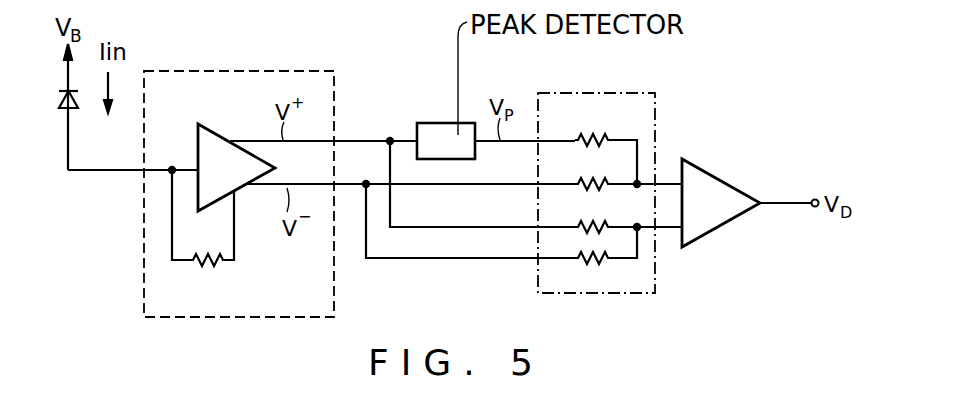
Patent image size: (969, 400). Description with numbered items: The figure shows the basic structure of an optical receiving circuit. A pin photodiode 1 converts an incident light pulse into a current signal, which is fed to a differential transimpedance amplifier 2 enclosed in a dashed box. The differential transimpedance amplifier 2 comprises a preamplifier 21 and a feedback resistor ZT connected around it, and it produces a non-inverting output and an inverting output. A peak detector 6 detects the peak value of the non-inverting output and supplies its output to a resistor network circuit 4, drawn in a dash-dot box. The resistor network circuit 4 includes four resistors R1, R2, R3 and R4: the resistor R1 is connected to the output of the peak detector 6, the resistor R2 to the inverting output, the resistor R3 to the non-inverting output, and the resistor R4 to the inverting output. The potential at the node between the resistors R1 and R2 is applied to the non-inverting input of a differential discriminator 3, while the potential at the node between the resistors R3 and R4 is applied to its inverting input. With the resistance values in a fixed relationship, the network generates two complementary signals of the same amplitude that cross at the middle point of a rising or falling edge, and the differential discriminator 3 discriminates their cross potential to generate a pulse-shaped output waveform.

The pin photodiode 1 is at (73, 110).
The differential transimpedance amplifier 2 is at (212, 70).
The preamplifier 21 is at (224, 127).
The feedback resistor ZT is at (208, 270).
The peak detector 6 is at (443, 123).
The resistor network circuit 4 is at (606, 92).
The resistor R1 is at (585, 130).
The resistor R2 is at (590, 176).
The resistor R3 is at (592, 219).
The resistor R4 is at (598, 268).
The differential discriminator 3 is at (718, 178).